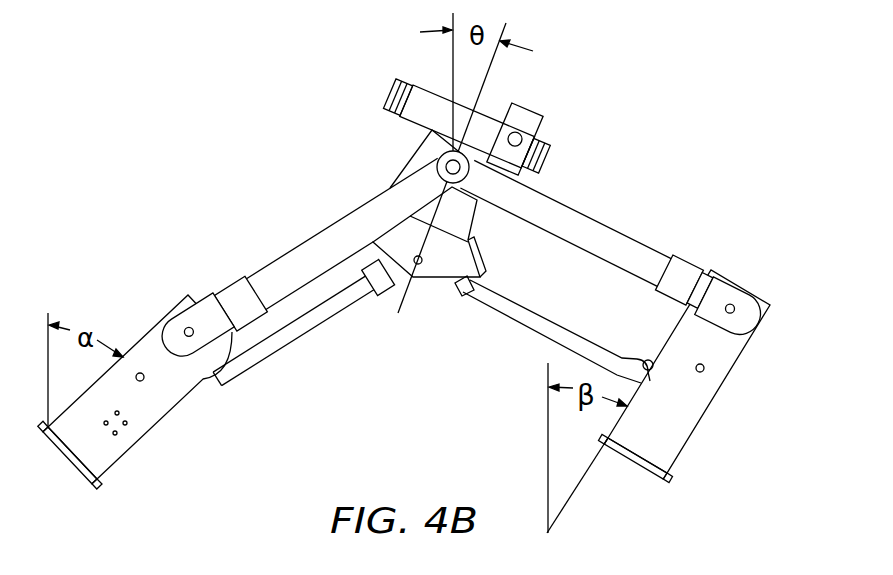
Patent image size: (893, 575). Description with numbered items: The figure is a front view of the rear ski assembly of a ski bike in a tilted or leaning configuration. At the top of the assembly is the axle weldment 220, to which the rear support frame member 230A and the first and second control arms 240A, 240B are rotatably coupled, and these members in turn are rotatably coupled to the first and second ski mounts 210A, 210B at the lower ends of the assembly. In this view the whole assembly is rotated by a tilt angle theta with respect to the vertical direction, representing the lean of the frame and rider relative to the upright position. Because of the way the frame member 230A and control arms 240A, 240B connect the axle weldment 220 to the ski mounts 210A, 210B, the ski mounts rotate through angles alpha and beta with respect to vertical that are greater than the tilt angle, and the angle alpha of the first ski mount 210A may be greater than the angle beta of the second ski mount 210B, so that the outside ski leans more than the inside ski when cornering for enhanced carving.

The first ski mount 210A is at (140, 437).
The second ski mount 210B is at (697, 423).
The axle weldment 220 is at (422, 147).
The rear support frame member 230A is at (577, 212).
The first control arm 240A is at (303, 337).
The second control arm 240B is at (527, 327).